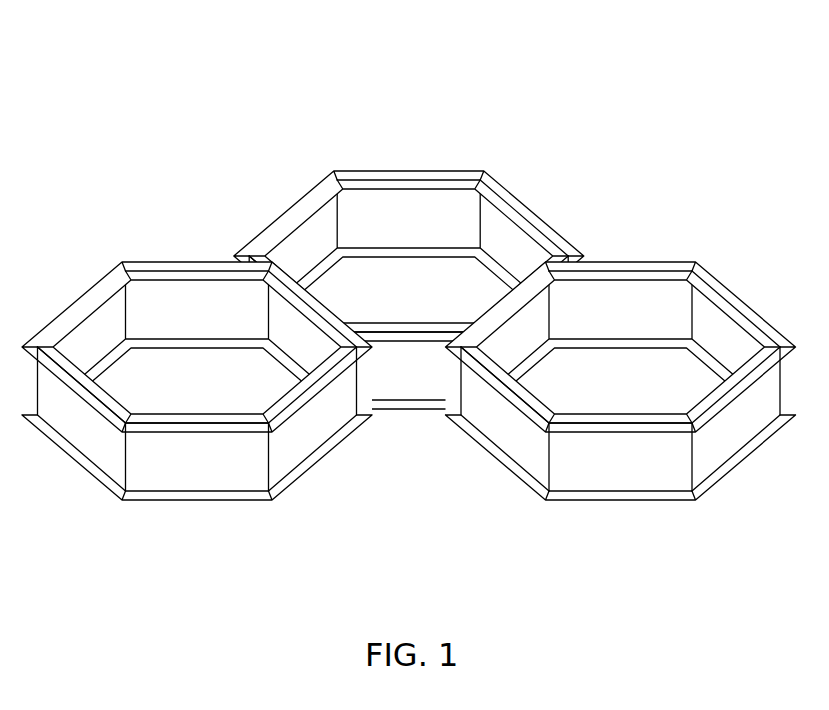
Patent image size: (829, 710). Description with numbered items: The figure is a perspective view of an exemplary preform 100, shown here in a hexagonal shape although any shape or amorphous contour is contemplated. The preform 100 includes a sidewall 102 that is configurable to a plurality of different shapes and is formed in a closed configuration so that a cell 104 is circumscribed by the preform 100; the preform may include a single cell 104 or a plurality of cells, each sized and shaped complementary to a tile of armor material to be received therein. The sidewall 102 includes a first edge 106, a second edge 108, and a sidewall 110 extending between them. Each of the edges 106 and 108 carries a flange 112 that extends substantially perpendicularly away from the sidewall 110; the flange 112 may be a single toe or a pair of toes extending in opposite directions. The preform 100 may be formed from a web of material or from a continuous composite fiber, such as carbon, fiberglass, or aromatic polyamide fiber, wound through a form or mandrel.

The preform 100 is at (409, 299).
The sidewall 102 is at (624, 471).
The cell 104 is at (640, 309).
The first edge 106 is at (541, 495).
The second edge 108 is at (509, 394).
The sidewall 110 is at (526, 457).
The flange 112 is at (532, 401).